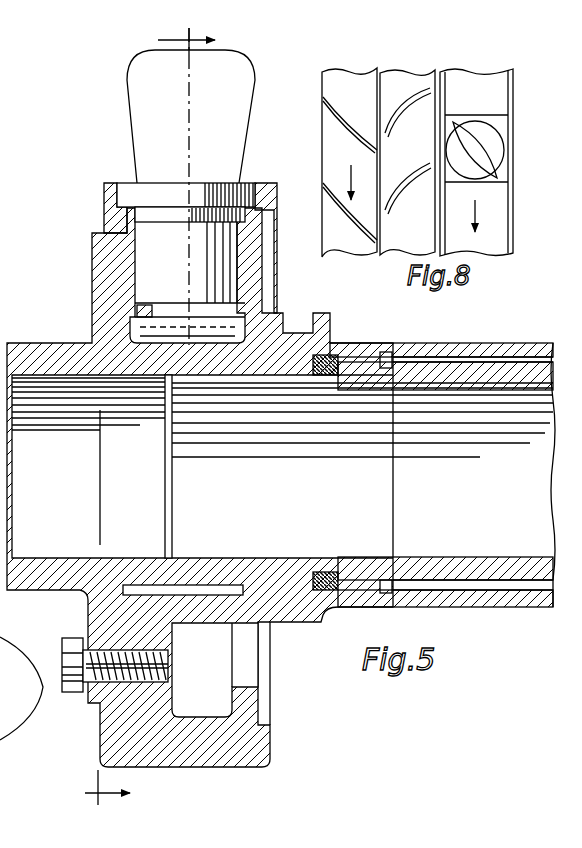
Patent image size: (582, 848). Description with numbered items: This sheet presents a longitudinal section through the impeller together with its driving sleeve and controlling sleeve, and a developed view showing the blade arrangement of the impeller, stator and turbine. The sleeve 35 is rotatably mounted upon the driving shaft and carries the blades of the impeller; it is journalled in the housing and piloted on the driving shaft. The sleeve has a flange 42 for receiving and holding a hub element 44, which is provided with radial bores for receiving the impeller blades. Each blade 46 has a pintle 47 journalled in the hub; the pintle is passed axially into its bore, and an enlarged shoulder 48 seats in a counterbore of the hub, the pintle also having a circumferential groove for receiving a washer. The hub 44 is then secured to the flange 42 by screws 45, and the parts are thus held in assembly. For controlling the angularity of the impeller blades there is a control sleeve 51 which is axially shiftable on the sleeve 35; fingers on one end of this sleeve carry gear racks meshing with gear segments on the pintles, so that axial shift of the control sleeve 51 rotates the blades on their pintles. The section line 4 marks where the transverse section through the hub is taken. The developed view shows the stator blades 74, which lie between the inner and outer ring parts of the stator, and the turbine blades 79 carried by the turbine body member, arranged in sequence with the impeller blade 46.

In FIG. 5, the section line 4- 4 is at (138, 417).
In FIG. 5, the sleeve 35 is at (421, 392).
In FIG. 5, the flange 42 is at (97, 265).
In FIG. 5, the hub element 44 is at (103, 193).
In FIG. 5, the screws 45 is at (63, 646).
In FIG. 5, the blade 46 is at (145, 115).
In FIG. 8, the blade 46 is at (483, 155).
In FIG. 5, the pintle 47 is at (165, 276).
In FIG. 5, the enlarged shoulder 48 is at (143, 190).
In FIG. 8, the enlarged shoulder 48 is at (500, 152).
In FIG. 5, the control sleeve 51 is at (490, 324).
In FIG. 8, the blades 74 is at (408, 182).
In FIG. 8, the blades 79 is at (340, 103).